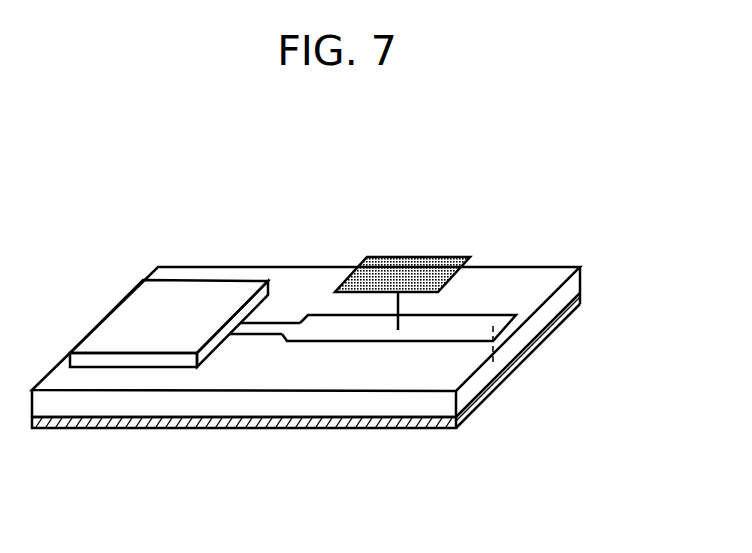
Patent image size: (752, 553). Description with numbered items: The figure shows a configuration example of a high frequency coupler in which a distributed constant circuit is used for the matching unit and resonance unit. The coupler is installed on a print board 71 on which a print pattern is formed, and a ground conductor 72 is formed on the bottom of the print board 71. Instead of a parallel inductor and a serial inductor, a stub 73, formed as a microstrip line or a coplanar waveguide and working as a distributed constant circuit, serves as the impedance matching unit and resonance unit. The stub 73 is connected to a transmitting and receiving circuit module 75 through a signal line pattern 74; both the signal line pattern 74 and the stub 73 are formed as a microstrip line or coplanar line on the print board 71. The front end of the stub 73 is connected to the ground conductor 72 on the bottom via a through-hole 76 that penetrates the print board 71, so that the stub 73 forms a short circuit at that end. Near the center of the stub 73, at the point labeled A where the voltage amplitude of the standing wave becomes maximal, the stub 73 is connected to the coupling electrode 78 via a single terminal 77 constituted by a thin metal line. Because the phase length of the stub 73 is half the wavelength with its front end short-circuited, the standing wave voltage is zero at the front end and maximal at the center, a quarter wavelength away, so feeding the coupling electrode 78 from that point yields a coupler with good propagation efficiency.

The print board 71 is at (610, 253).
The ground conductor 72 is at (67, 430).
The stub 73 is at (345, 335).
The signal line pattern 74 is at (277, 320).
The transmitting and receiving circuit module 75 is at (137, 312).
The through-hole 76 is at (493, 348).
The single terminal 77 is at (402, 307).
The coupling electrode 78 is at (387, 262).
The point A is at (276, 353).